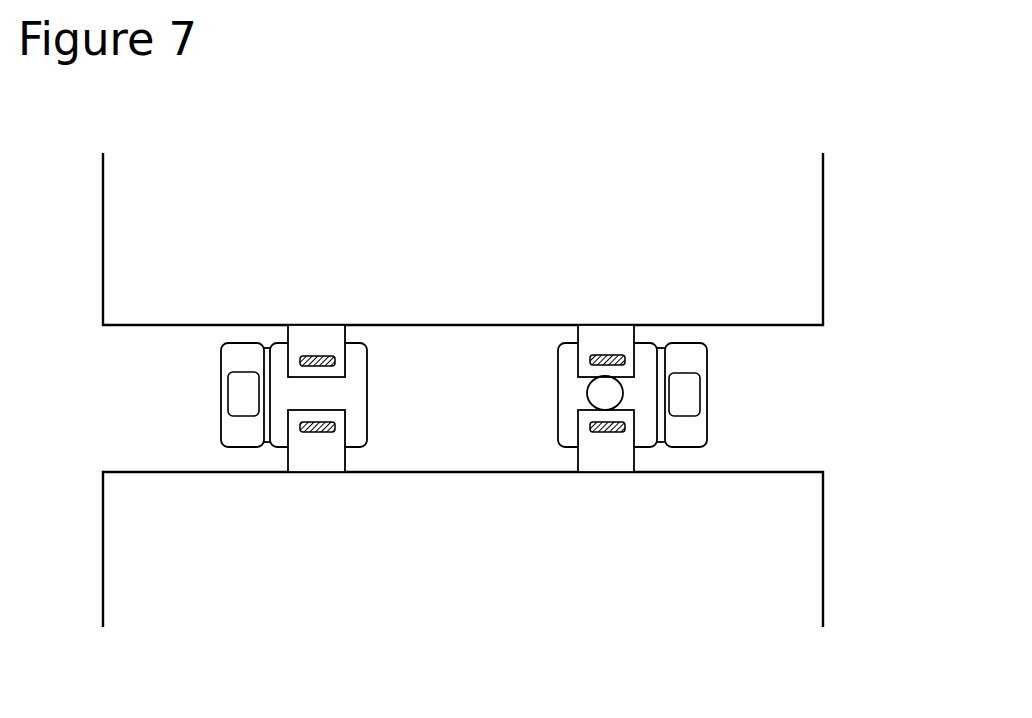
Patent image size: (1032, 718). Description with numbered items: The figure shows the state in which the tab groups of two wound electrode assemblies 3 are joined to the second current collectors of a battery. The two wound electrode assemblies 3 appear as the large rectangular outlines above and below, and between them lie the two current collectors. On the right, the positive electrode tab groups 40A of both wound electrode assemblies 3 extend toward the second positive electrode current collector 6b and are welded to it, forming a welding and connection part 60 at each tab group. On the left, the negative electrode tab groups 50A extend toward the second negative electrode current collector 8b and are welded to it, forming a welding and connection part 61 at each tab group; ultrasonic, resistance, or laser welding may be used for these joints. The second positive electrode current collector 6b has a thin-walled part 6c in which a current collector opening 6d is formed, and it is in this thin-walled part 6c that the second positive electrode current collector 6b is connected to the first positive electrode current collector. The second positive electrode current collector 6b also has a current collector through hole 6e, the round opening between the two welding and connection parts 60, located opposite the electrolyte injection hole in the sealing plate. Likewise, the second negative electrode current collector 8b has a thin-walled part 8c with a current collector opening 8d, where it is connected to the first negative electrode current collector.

The wound electrode assembly 3 is at (773, 273).
The negative electrode tab group 50A is at (313, 338).
The positive electrode tab group 40A is at (605, 338).
The welding and connection part 61 is at (335, 353).
The welding and connection part 60 is at (590, 357).
The second positive electrode current collector 6b is at (688, 357).
The thin-walled part 6c is at (687, 407).
The current collector opening 6d is at (690, 392).
The current collector through hole 6e is at (588, 389).
The second negative electrode current collector 8b is at (243, 355).
The thin-walled part 8c is at (230, 407).
The current collector opening 8d is at (238, 394).